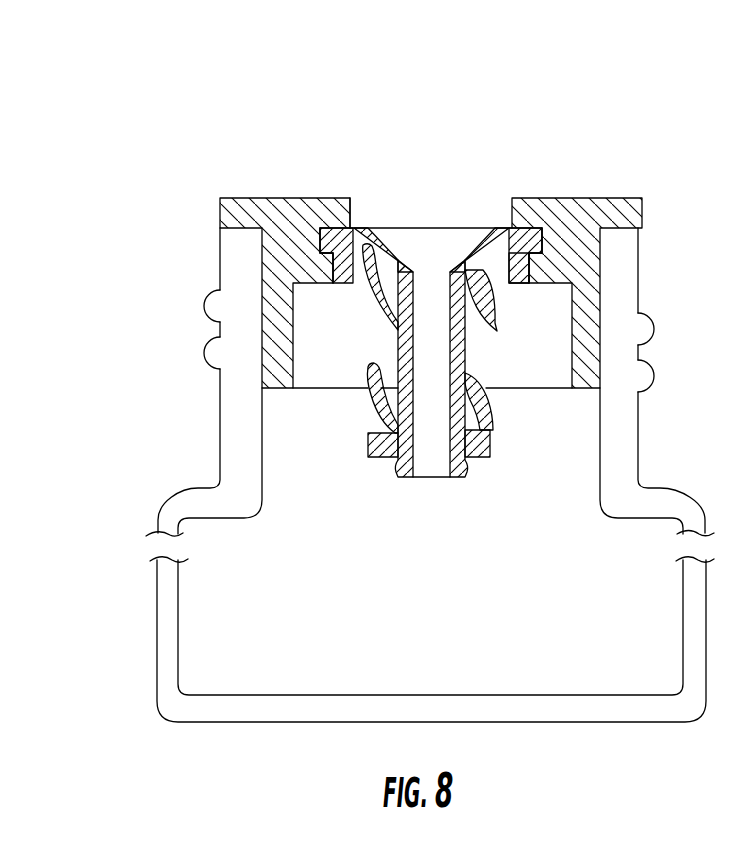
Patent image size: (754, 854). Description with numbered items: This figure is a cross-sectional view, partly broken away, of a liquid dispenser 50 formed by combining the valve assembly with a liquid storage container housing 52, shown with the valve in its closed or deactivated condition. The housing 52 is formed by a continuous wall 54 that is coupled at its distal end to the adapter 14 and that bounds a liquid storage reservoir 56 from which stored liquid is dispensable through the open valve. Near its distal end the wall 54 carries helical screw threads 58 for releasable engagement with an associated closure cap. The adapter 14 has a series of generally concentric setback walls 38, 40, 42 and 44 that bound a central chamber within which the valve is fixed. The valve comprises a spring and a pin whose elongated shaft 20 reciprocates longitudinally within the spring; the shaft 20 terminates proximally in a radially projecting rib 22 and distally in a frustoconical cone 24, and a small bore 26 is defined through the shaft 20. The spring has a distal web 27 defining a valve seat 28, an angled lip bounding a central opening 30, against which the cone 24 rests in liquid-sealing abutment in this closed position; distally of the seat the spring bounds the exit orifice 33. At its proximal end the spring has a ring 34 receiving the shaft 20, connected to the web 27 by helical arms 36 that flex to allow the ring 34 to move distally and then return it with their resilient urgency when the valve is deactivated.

The liquid dispenser 50 is at (166, 172).
The adapter 14 is at (582, 217).
The distal web 27 is at (549, 233).
The setback wall 42 is at (340, 265).
The exit orifice 33 is at (430, 207).
The setback wall 40 is at (337, 222).
The setback wall 38 is at (352, 213).
The valve seat 28 is at (500, 232).
The central opening 30 is at (488, 262).
The frustoconical cone 24 is at (475, 232).
The elongated shaft 20 is at (465, 353).
The rib 22 is at (470, 463).
The bore 26 is at (412, 346).
The helical arms 36 is at (372, 407).
The ring 34 is at (368, 447).
The continuous wall 54 is at (237, 442).
The setback wall 44 is at (296, 350).
The helical screw threads 58 is at (657, 330).
The liquid storage container housing 52 is at (158, 587).
The liquid storage reservoir 56 is at (433, 597).